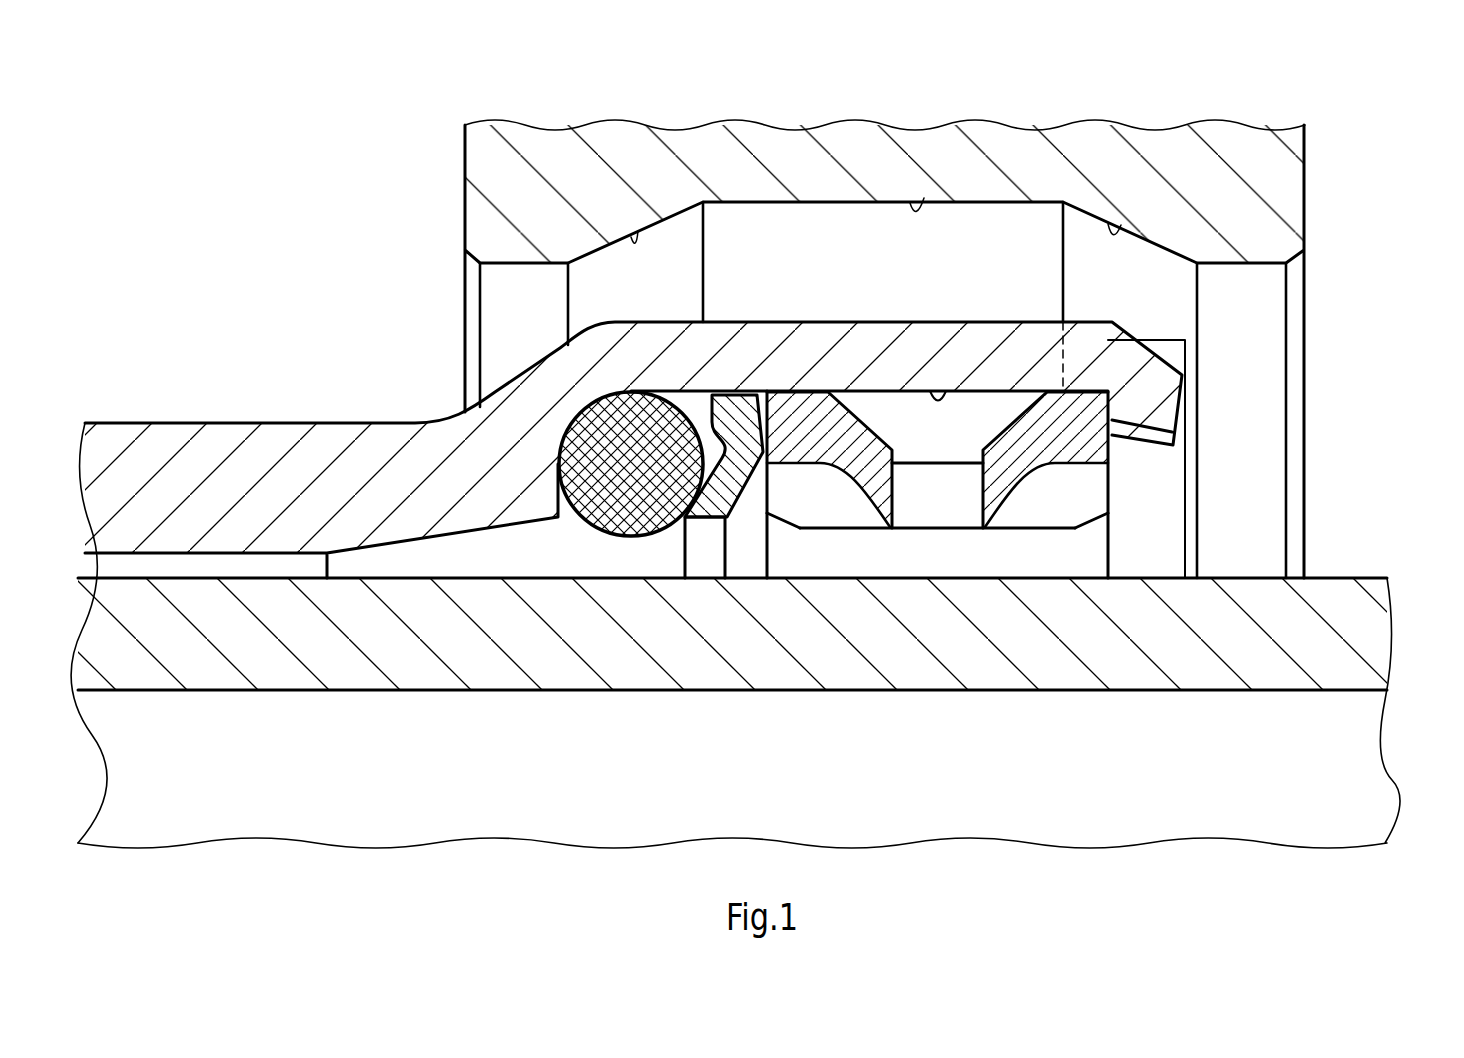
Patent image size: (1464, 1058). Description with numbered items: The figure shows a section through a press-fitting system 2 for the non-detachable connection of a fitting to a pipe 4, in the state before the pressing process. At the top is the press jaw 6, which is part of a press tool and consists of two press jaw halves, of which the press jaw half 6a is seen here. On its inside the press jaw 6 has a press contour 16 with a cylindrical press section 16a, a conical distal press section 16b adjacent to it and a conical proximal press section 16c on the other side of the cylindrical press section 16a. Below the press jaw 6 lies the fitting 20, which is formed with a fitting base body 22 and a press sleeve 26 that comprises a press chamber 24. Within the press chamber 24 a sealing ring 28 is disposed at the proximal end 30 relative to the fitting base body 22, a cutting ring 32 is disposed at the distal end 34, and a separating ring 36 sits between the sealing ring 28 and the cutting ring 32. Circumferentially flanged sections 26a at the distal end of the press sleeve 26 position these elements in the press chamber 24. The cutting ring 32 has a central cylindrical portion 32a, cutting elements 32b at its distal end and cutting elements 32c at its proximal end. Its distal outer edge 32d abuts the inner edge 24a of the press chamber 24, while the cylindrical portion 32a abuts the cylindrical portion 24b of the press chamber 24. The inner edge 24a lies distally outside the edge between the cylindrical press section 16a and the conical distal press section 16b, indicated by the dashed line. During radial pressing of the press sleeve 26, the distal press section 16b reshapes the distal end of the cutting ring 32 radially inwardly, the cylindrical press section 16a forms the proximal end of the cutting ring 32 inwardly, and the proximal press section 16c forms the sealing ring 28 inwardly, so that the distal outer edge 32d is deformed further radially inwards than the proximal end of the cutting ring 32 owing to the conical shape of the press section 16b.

The press-fitting system 2 is at (307, 180).
The pipe 4 is at (1268, 662).
The press jaw 6 is at (1352, 145).
The press jaw half 6a is at (1222, 185).
The press contour 16 is at (820, 180).
The cylindrical press section 16a is at (924, 198).
The conical distal press section 16b is at (1121, 225).
The conical proximal press section 16c is at (631, 237).
The fitting 20 is at (180, 395).
The fitting base body 22 is at (262, 456).
The press chamber 24 is at (692, 410).
The inner edge of the press chamber 24a is at (1112, 390).
The cylindrical portion of the press chamber 24b is at (945, 395).
The press sleeve 26 is at (872, 310).
The circumferentially flanged sections 26a is at (1138, 408).
The sealing ring 28 is at (623, 505).
The proximal end of the press chamber 30 is at (578, 319).
The cutting ring 32 is at (972, 581).
The central cylindrical portion 32a is at (948, 440).
The cutting elements at the distal end 32b is at (1010, 468).
The cutting elements at the proximal end 32c is at (873, 487).
The distal outer edge 32d is at (1097, 396).
The distal end of the press chamber 34 is at (1177, 323).
The separating ring 36 is at (713, 503).